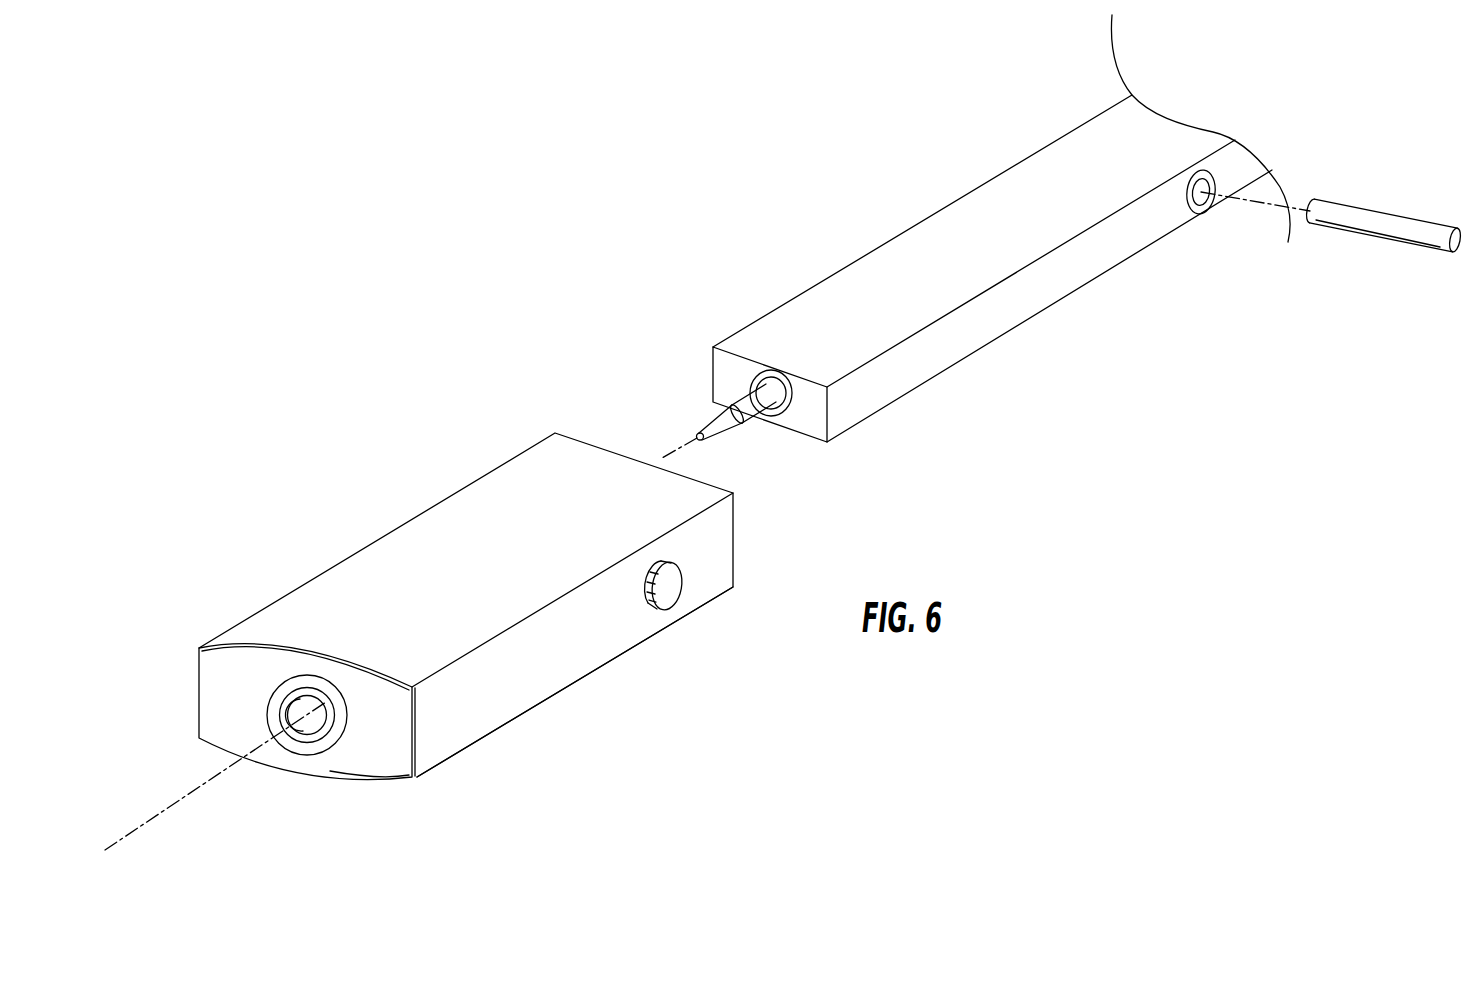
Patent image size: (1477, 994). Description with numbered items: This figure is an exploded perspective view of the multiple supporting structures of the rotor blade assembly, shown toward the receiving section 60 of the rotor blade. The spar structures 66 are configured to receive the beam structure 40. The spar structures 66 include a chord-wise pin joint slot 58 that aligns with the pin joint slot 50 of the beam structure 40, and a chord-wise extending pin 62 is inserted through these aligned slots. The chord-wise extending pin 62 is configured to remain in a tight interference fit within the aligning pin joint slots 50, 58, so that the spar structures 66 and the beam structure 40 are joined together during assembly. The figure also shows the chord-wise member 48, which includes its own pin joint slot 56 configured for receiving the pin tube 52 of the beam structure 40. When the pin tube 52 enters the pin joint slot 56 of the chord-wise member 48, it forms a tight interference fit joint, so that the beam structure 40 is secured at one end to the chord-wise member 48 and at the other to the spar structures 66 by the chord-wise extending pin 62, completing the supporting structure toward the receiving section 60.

The beam structure 40 is at (1020, 187).
The chord-wise member 48 is at (232, 705).
The pin joint slot 50 is at (1202, 208).
The pin tube 52 is at (717, 438).
The pin joint slot 56 is at (288, 727).
The chord-wise pin joint slot 58 is at (663, 590).
The receiving section 60 is at (362, 545).
The chord-wise extending pin 62 is at (1397, 212).
The spar structures 66 is at (595, 667).